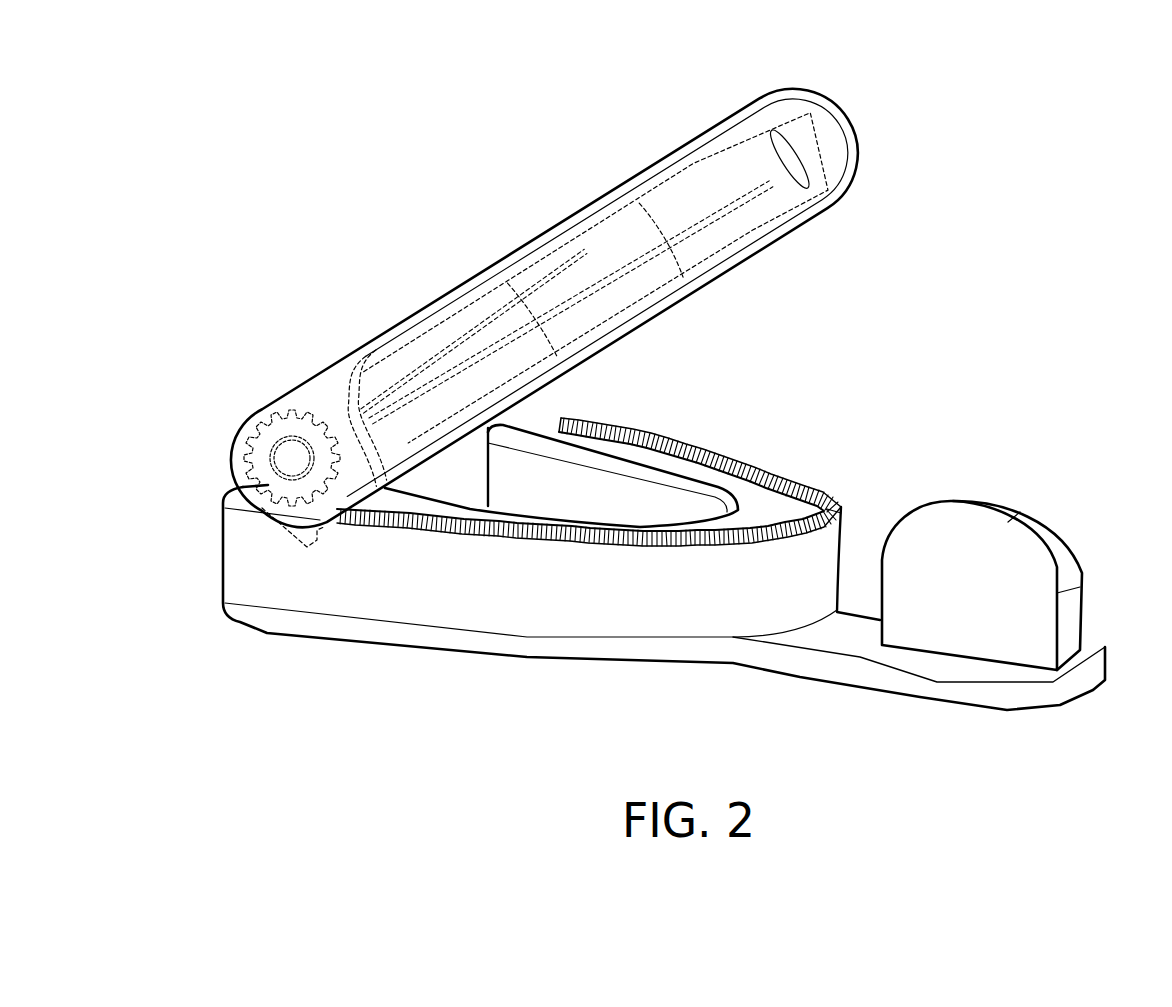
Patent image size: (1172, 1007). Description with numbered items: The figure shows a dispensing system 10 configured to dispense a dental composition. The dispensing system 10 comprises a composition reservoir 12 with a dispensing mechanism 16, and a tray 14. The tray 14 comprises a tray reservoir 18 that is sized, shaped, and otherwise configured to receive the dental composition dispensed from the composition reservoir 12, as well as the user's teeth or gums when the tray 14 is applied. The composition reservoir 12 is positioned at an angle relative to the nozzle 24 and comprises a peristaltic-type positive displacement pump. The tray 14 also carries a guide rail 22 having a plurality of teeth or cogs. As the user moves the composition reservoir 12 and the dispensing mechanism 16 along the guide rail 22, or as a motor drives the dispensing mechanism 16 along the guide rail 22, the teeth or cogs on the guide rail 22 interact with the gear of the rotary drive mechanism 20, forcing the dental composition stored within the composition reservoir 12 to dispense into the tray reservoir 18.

The dispensing system 10 is at (946, 130).
The composition reservoir 12 is at (568, 213).
The tray 14 is at (583, 625).
The dispensing mechanism 16 is at (249, 424).
The tray reservoir 18 is at (742, 490).
The rotary drive mechanism 20 is at (290, 430).
The guide rail 22 is at (808, 482).
The nozzle 24 is at (307, 552).